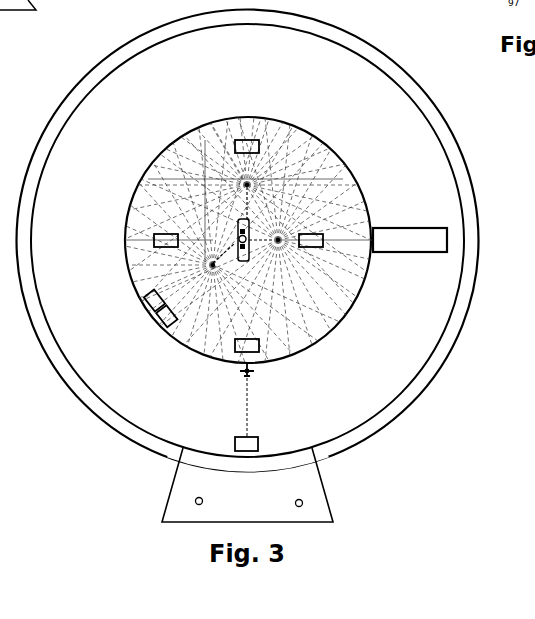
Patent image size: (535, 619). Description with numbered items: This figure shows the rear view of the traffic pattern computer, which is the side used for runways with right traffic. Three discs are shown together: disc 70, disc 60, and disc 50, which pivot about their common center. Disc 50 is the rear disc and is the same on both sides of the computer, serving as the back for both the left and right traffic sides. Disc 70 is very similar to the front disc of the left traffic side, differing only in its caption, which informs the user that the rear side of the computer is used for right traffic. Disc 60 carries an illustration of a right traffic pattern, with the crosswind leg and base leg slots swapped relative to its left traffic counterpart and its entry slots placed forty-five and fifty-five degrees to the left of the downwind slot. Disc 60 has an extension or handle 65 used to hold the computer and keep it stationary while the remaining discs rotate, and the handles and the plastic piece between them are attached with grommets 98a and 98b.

The disc 50 is at (240, 22).
The disc 60 is at (246, 226).
The handle 65 is at (316, 479).
The disc 70 is at (348, 110).
The grommet 98a is at (295, 501).
The grommet 98b is at (203, 500).